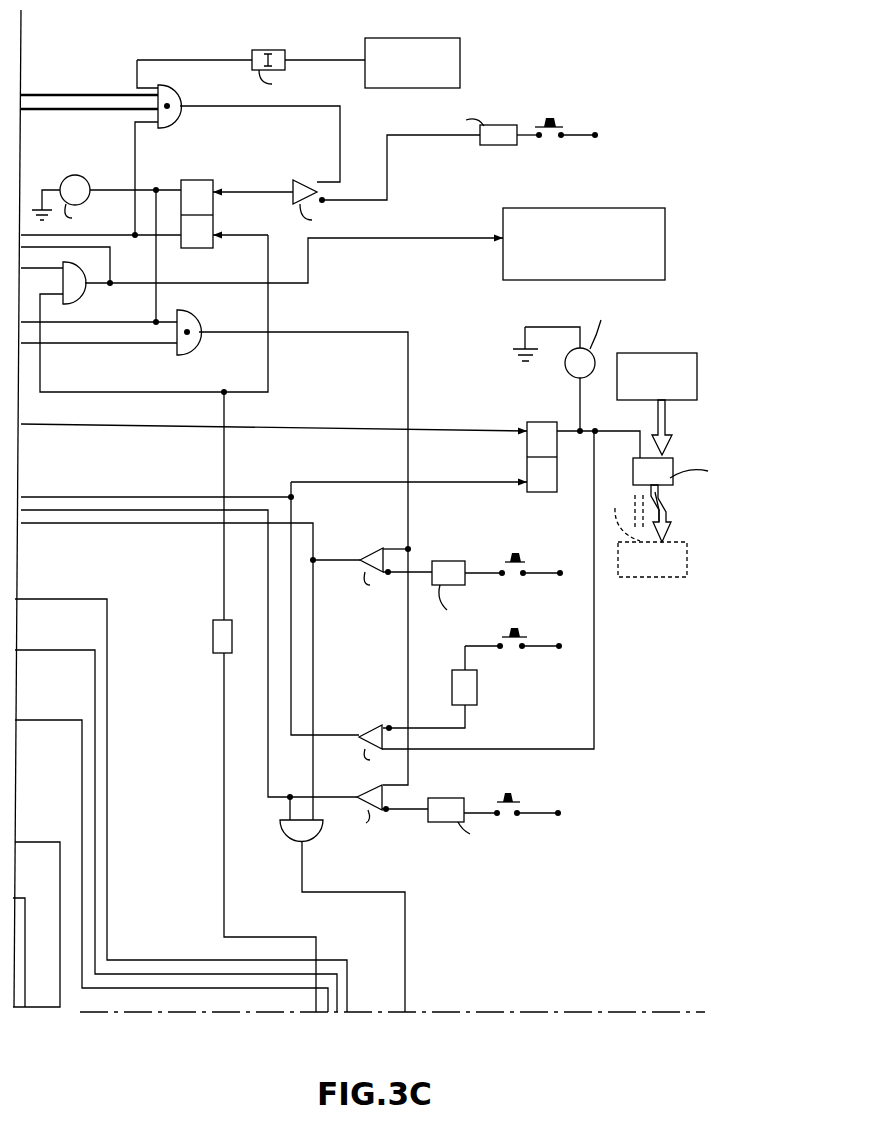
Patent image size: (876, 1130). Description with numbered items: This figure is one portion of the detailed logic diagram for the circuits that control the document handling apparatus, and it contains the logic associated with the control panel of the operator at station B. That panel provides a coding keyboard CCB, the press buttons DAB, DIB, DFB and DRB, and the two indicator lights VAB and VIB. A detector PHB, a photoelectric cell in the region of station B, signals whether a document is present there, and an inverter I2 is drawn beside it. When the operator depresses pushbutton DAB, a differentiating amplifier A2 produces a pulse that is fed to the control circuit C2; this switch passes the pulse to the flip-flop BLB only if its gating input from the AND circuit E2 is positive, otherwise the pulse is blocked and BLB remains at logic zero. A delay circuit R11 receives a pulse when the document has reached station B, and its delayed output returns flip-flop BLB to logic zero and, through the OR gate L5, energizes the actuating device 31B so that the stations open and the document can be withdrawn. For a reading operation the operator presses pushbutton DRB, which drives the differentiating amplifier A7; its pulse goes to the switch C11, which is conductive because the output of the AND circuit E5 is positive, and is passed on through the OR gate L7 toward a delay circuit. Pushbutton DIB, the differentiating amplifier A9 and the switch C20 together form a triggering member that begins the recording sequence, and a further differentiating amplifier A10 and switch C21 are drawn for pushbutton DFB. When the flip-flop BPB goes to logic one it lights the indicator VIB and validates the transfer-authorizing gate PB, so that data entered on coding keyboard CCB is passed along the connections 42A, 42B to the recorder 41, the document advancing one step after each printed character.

The inverter I2 is at (272, 50).
The AND circuit E2 is at (179, 94).
The detector PHB is at (458, 74).
The pushbutton DAB is at (563, 113).
The differentiating amplifier A2 is at (508, 140).
The indicator light VAB is at (80, 183).
The flip-flop BLB is at (233, 213).
The control circuit C2 is at (306, 183).
The actuating device 31B is at (619, 212).
The OR gate L5 is at (93, 289).
The AND circuit E5 is at (206, 324).
The indicator light VIB is at (569, 371).
The coding keyboard CCB is at (689, 354).
The flip-flop BPB is at (540, 451).
The transfer-authorizing gate PB is at (675, 470).
The recorder input line 42A is at (620, 515).
The recorder input line 42B is at (686, 513).
The recorder 41 is at (650, 577).
The switch C20 is at (368, 551).
The differentiating amplifier A9 is at (442, 567).
The pushbutton DIB is at (519, 551).
The pushbutton DFB is at (517, 621).
The differentiating amplifier A10 is at (472, 699).
The switch C21 is at (366, 730).
The delay circuit R11 is at (212, 645).
The pushbutton DRB is at (516, 789).
The switch C11 is at (348, 820).
The differentiating amplifier A7 is at (448, 812).
The OR gate L7 is at (290, 835).